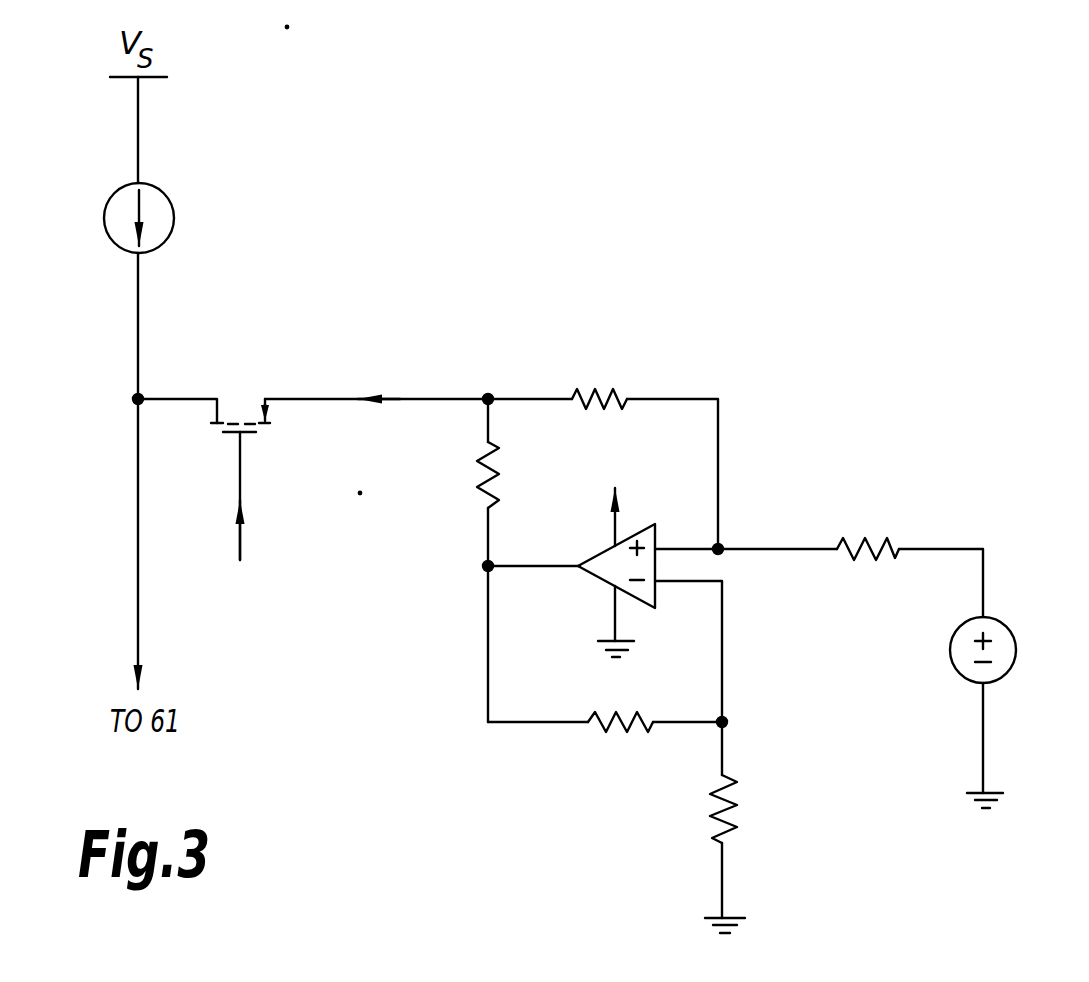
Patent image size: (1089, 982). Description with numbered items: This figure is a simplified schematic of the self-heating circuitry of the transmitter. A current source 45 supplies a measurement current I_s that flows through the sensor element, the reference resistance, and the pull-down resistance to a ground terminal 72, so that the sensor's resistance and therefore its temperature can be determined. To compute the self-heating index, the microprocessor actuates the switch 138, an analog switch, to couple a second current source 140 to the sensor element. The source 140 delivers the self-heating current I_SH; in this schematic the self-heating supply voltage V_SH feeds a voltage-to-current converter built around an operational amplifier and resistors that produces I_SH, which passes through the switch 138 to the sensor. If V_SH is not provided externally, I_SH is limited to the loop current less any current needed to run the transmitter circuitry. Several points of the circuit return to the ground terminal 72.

The current source 45 is at (168, 182).
The analog switch 138 is at (241, 386).
The self-heating current source 140 is at (746, 228).
The ground terminal 72 is at (658, 652).